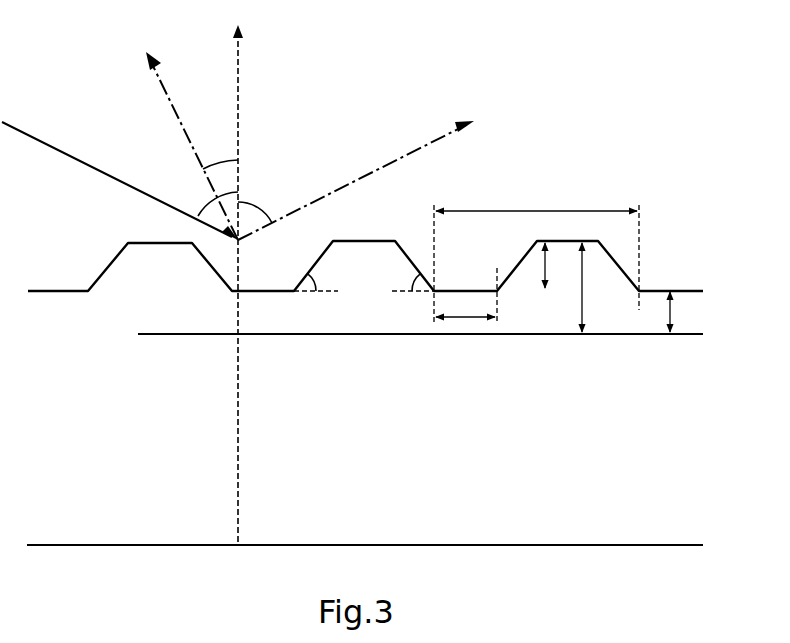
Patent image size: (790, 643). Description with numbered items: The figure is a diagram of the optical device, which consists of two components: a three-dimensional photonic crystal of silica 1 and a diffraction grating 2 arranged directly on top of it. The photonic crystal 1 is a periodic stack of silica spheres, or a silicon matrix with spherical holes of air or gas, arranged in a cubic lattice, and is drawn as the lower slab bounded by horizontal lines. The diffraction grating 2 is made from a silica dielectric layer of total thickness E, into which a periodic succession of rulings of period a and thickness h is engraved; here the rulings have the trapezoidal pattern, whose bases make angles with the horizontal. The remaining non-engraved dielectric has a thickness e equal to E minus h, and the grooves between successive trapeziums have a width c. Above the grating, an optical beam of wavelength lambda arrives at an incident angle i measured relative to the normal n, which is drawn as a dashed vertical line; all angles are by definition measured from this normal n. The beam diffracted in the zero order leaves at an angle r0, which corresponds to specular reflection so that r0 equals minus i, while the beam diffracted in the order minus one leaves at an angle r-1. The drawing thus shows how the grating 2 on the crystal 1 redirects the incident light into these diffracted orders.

The three-dimensional photonic crystal 1 is at (719, 335).
The diffraction grating 2 is at (719, 241).
The normal n is at (249, 285).
The incident angle i is at (120, 181).
The angle of the diffracted beam in the order −1 r-1 is at (192, 146).
The angle of the diffracted beam in the order 0 r0 is at (356, 180).
The period of the rulings a is at (536, 253).
The width of the grooves c is at (466, 295).
The thickness of the rulings h is at (554, 265).
The thickness of the dielectric layer E is at (593, 287).
The thickness of the non-engraved dielectric layer e is at (679, 312).